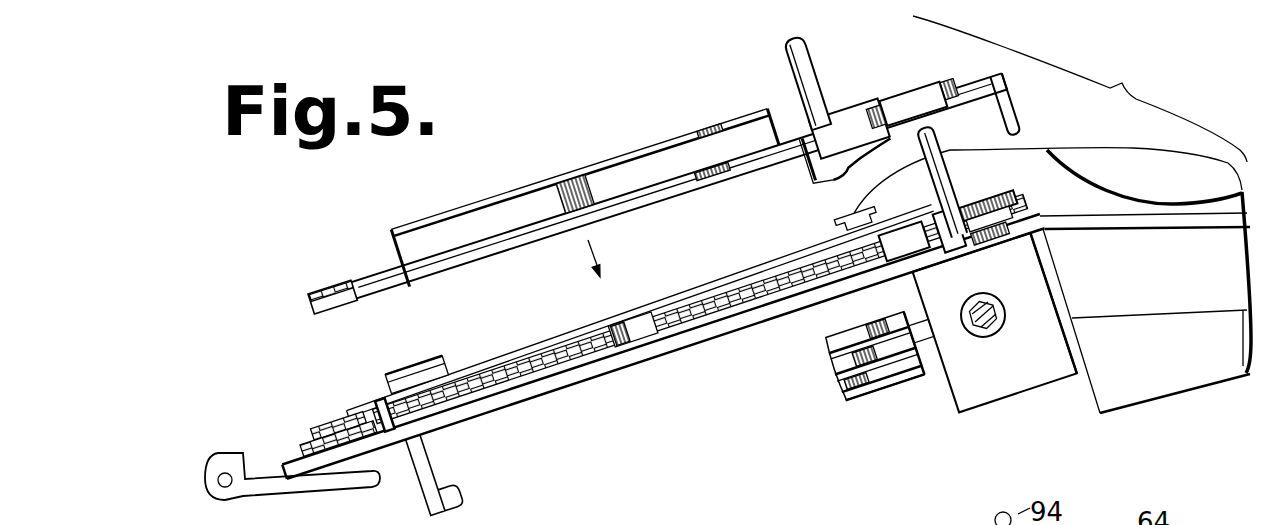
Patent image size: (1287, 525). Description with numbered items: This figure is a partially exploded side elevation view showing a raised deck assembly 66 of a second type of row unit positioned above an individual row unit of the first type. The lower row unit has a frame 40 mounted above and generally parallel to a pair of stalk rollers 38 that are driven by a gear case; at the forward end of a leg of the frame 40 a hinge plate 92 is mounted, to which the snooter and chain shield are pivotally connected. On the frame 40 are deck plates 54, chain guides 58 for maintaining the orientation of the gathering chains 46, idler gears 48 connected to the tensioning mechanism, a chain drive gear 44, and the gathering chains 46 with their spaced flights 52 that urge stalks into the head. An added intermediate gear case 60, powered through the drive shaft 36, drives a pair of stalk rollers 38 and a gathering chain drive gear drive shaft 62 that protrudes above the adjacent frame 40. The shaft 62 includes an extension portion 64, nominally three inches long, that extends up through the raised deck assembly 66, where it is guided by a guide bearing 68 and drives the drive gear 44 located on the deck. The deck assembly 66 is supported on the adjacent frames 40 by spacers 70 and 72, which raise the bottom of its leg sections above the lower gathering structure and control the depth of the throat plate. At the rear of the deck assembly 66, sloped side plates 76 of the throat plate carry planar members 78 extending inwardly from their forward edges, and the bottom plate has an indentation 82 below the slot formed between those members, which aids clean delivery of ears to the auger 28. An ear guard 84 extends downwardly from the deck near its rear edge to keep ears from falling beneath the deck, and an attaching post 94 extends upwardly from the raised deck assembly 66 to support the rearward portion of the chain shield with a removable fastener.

The auger 28 is at (1097, 188).
The drive shaft 36 is at (980, 338).
The stalk rollers 38 is at (873, 397).
The frame 40 is at (441, 424).
The chain drive gear 44 is at (970, 204).
The gathering chains 46 is at (575, 352).
The idler gears 48 is at (307, 424).
The flights 52 is at (637, 335).
The deck plates 54 is at (408, 285).
The chain guides 58 is at (515, 190).
The intermediate gear case 60 is at (953, 413).
The gathering chain drive gear drive shaft 62 is at (956, 237).
The extension portion 64 is at (937, 173).
The raised deck assembly 66 is at (678, 200).
The guide bearings 68 is at (889, 46).
The spacer 70 is at (435, 362).
The spacer 72 is at (833, 231).
The sloped side plates 76 is at (850, 119).
The planar member 78 is at (803, 161).
The indentation 82 is at (833, 188).
The ear guard 84 is at (1008, 106).
The hinge plate 92 is at (225, 503).
The attaching post 94 is at (806, 52).